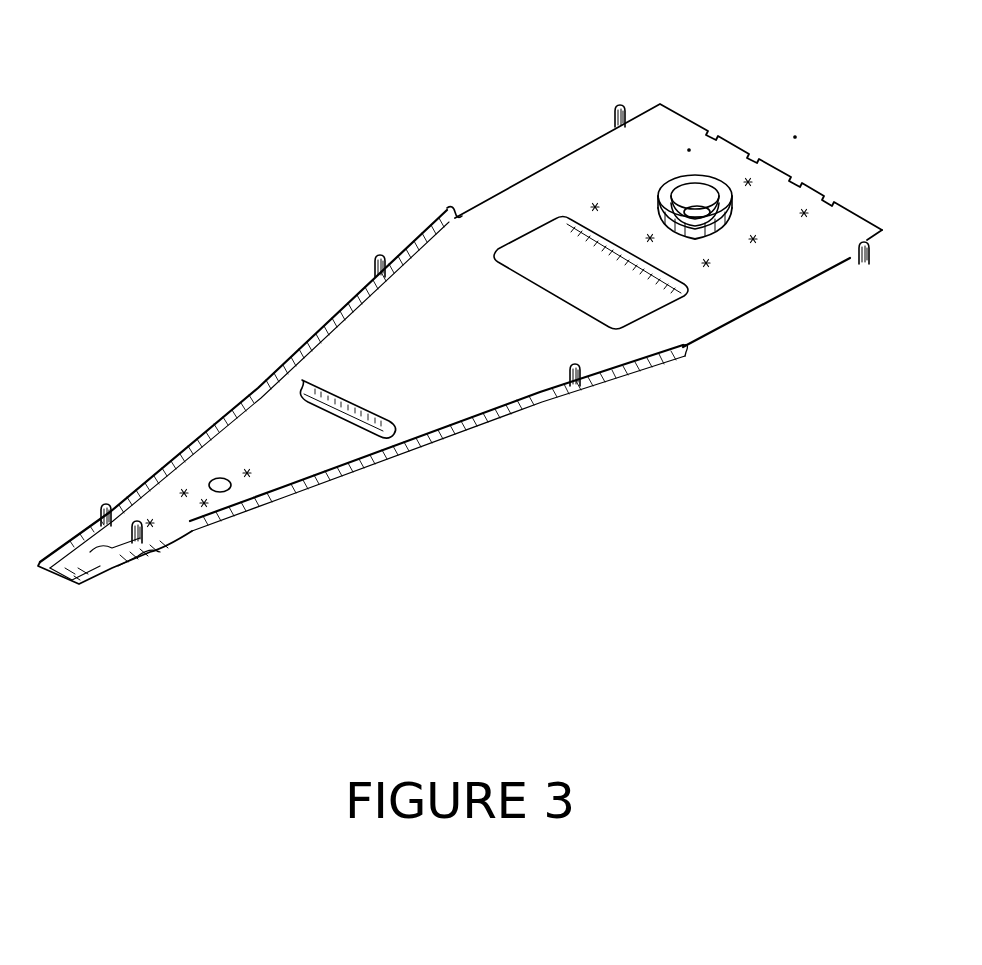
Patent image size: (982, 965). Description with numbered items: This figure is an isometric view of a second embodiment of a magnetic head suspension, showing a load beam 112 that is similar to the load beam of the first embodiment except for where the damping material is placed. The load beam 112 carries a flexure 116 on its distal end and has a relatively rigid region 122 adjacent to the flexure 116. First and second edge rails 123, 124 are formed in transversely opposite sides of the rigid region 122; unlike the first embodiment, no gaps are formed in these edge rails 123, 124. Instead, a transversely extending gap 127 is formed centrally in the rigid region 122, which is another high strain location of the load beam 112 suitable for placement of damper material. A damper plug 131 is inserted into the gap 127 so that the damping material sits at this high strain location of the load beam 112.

The load beam 112 is at (383, 133).
The flexure 116 is at (110, 575).
The rigid region 122 is at (607, 381).
The first edge rail 123 is at (357, 287).
The second edge rail 124 is at (540, 393).
The transversely extending gap 127 is at (360, 428).
The damper plug 131 is at (328, 388).